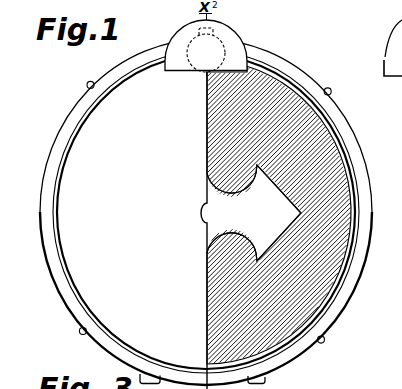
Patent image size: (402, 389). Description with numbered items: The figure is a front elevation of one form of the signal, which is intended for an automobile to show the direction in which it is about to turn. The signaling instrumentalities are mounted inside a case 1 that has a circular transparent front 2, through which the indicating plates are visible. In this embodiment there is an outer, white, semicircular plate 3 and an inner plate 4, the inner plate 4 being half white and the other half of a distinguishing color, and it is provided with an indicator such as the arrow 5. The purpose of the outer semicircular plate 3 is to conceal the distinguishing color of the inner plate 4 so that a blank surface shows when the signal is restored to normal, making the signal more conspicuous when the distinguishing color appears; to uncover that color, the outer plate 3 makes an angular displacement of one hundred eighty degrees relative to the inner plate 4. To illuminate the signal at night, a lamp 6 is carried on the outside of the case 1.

The case 1 is at (61, 128).
The circular transparent front 2 is at (324, 308).
The outer semicircular plate 3 is at (82, 288).
The inner plate 4 is at (333, 143).
The arrow 5 is at (254, 213).
The lamp 6 is at (200, 73).